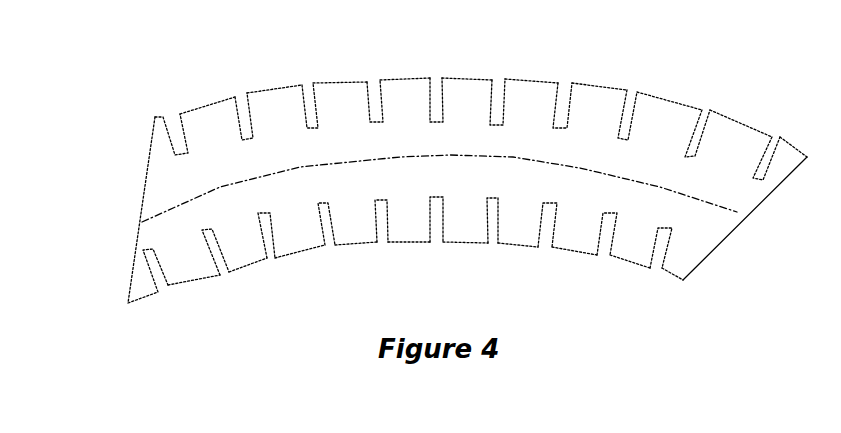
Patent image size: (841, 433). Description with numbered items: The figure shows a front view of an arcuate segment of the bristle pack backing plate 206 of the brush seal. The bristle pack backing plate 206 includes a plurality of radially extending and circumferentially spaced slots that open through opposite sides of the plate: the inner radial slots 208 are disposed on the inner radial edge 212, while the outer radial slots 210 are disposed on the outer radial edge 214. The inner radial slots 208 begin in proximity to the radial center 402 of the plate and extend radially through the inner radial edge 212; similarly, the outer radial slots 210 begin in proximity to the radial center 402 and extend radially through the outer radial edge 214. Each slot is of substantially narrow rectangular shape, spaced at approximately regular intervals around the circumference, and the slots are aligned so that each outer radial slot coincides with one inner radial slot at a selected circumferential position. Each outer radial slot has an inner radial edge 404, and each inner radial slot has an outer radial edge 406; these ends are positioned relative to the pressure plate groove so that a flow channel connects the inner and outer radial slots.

The bristle pack backing plate 206 is at (155, 319).
The inner radial slots 208 is at (168, 282).
The outer radial slots 210 is at (238, 98).
The inner radial edge 212 is at (577, 250).
The outer radial edge 214 is at (533, 82).
The radial center 402 is at (213, 192).
The inner radial edge of the outer radial slots 404 is at (702, 115).
The outer radial edge of the inner radial slots 406 is at (655, 272).